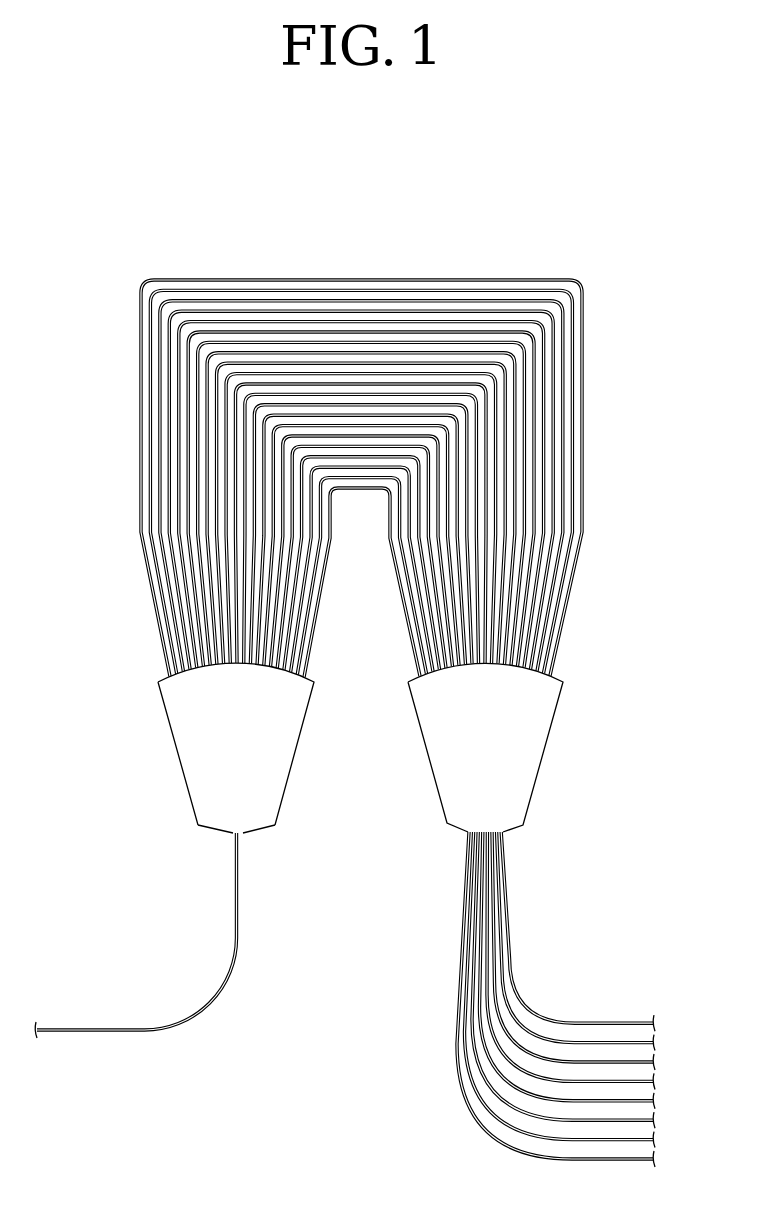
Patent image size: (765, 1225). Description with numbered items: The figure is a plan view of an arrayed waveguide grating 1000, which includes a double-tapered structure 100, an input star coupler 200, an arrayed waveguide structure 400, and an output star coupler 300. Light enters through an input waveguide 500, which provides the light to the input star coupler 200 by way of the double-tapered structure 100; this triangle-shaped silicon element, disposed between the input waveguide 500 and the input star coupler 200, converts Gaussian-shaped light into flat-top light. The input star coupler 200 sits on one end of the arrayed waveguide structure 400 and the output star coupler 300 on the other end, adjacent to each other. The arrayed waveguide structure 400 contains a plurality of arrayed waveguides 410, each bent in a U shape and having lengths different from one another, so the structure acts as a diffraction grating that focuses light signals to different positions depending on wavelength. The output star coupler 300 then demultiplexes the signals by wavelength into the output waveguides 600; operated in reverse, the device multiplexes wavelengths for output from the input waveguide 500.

The arrayed waveguide grating 1000 is at (503, 184).
The arrayed waveguide structure 400 is at (518, 276).
The arrayed waveguides 410 is at (584, 438).
The input star coupler 200 is at (192, 750).
The output star coupler 300 is at (531, 752).
The double-tapered structure 100 is at (232, 840).
The input waveguide 500 is at (233, 925).
The output waveguides 600 is at (508, 917).